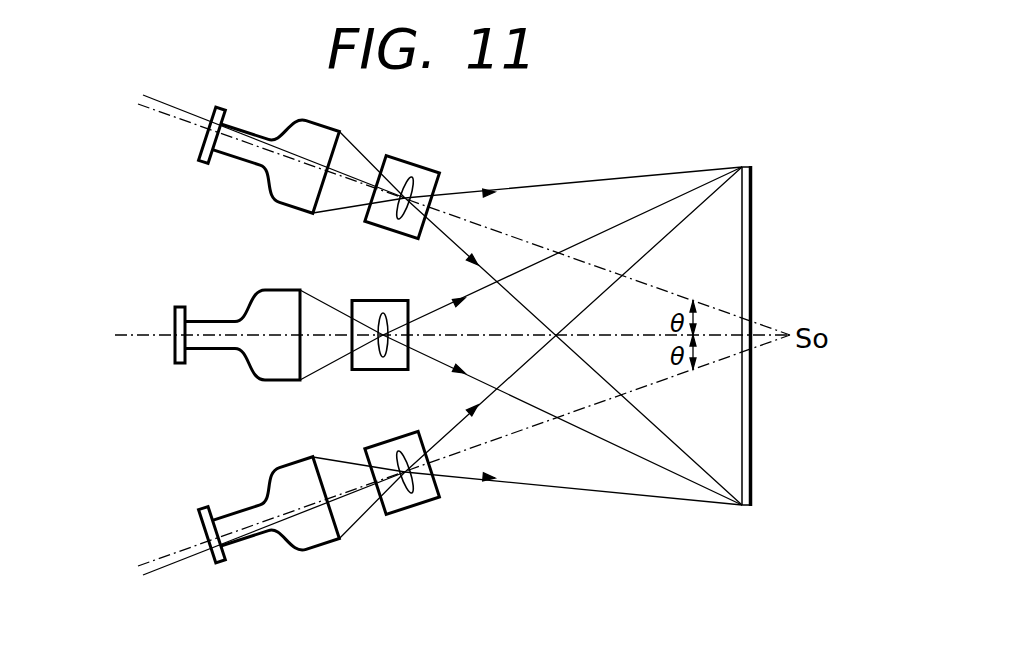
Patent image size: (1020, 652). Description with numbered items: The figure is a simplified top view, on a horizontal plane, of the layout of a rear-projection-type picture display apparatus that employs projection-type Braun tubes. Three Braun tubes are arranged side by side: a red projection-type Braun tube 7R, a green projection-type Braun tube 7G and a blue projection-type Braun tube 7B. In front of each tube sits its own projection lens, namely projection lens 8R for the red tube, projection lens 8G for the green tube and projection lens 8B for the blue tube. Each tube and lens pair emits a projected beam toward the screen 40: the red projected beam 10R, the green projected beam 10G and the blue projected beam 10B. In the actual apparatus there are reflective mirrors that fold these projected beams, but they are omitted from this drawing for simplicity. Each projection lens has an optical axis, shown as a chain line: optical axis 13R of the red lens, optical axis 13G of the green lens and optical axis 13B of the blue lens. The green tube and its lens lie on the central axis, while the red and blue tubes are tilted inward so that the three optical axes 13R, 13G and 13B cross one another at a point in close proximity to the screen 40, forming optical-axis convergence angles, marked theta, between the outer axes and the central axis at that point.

The blue projection-type Braun tube 7B is at (282, 184).
The projection lens 8B is at (366, 224).
The blue projected beam 10B is at (456, 239).
The optical axis 13B is at (524, 238).
The green projection-type Braun tube 7G is at (264, 367).
The projection lens 8G is at (372, 370).
The green projected beam 10G is at (447, 356).
The optical axis 13G is at (723, 336).
The red projection-type Braun tube 7R is at (290, 538).
The projection lens 8R is at (395, 514).
The red projected beam 10R is at (472, 475).
The optical axis 13R is at (531, 428).
The screen 40 is at (753, 247).